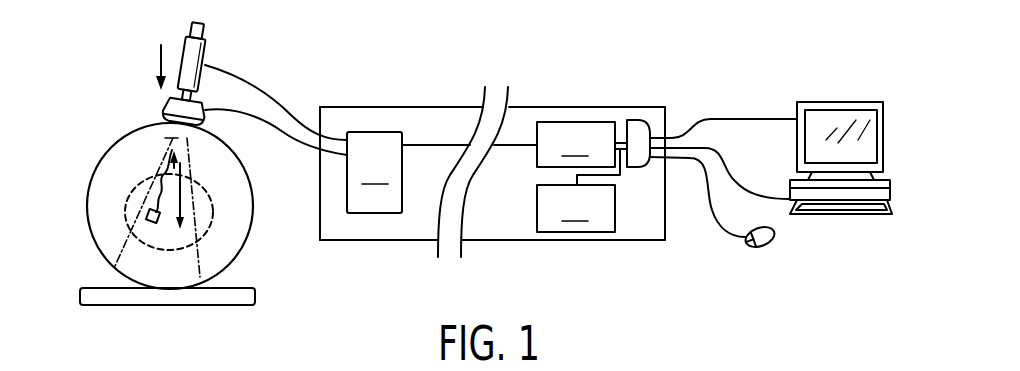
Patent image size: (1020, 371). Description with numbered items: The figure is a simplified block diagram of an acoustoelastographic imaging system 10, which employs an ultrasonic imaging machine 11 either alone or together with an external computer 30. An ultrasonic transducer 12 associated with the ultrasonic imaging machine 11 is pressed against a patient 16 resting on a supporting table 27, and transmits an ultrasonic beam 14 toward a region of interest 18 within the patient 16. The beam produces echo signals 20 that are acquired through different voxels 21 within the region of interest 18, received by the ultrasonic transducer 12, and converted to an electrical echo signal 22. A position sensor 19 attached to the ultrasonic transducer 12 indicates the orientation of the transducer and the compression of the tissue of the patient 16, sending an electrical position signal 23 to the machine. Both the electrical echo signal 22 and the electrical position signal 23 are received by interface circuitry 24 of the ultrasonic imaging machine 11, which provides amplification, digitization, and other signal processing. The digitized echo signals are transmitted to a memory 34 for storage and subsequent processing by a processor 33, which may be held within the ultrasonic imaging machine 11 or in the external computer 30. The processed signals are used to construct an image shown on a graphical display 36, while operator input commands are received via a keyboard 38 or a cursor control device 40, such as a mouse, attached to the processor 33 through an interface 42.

The acoustoelastographic imaging system 10 is at (330, 62).
The ultrasonic imaging machine 11 is at (375, 107).
The ultrasonic transducer 12 is at (167, 109).
The ultrasonic beam 14 is at (166, 137).
The patient 16 is at (251, 224).
The region of interest 18 is at (126, 196).
The position sensor 19 is at (206, 50).
The echo signals 20 is at (156, 180).
The voxels 21 is at (147, 218).
The electrical echo signal 22 is at (273, 131).
The electrical position signal 23 is at (257, 79).
The interface circuitry 24 is at (374, 172).
The supporting table 27 is at (82, 294).
The external computer 30 is at (582, 138).
The processor 33 is at (576, 144).
The memory 34 is at (576, 208).
The graphical display 36 is at (840, 102).
The keyboard 38 is at (840, 215).
The cursor control device 40 is at (748, 246).
The interface 42 is at (636, 120).